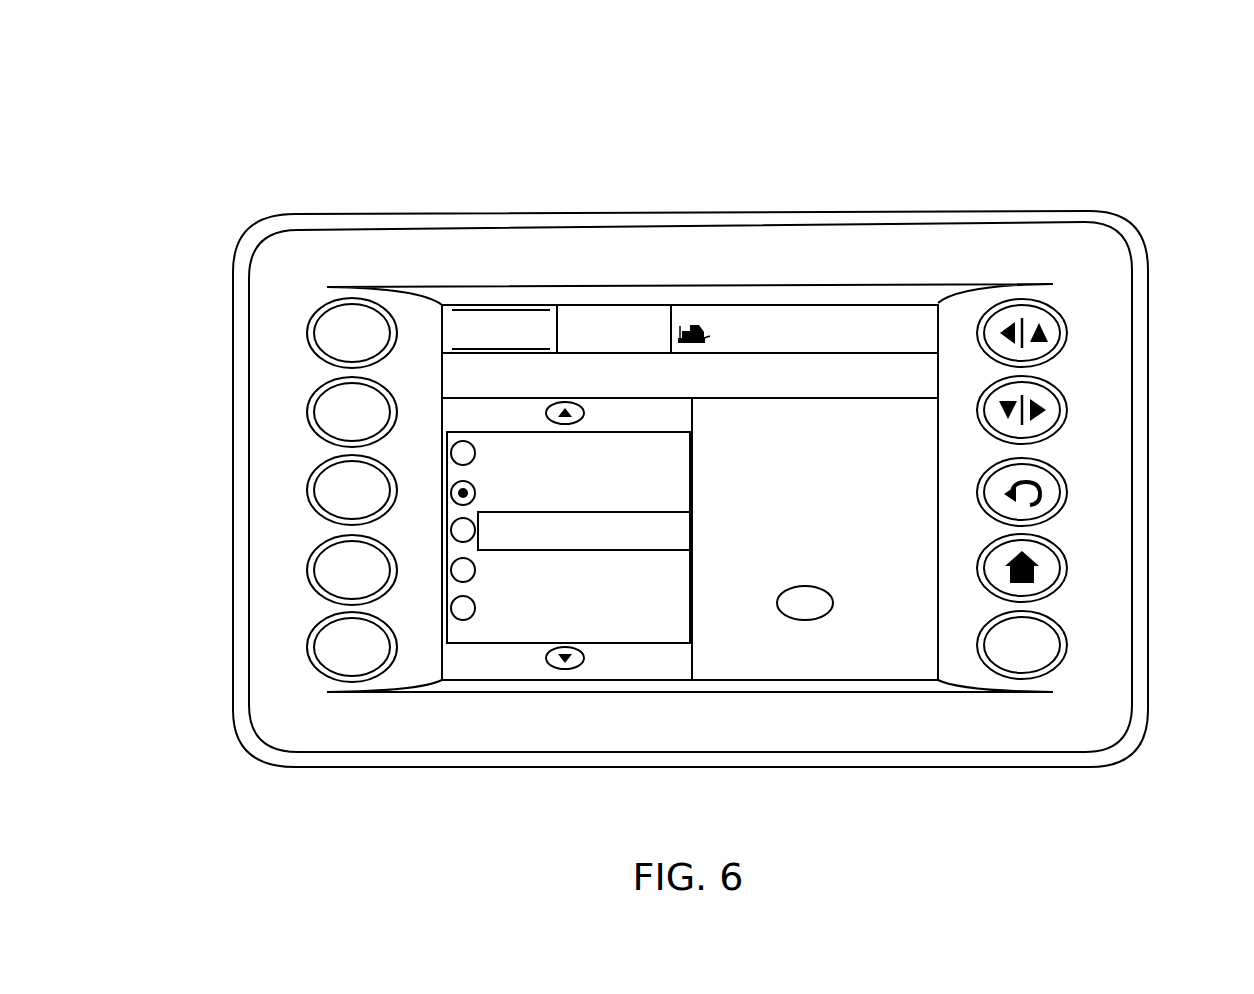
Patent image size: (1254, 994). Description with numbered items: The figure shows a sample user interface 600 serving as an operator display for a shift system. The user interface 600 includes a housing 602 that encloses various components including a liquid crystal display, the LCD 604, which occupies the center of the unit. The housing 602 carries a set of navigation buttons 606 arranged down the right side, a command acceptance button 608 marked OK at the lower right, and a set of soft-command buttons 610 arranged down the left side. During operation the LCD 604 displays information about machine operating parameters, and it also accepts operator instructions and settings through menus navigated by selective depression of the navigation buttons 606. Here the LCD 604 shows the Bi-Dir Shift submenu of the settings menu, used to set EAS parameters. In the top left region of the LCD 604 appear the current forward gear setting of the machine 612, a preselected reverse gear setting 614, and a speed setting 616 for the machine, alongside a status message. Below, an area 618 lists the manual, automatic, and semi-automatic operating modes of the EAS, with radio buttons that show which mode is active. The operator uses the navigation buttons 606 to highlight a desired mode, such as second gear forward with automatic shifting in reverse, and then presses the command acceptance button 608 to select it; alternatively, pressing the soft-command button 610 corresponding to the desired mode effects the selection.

The user interface 600 is at (1184, 106).
The housing 602 is at (1107, 272).
The liquid crystal display (LCD) 604 is at (877, 655).
The navigation buttons 606 is at (1065, 333).
The command acceptance button 608 is at (1065, 645).
The soft-command buttons 610 is at (310, 485).
The current forward gear setting 612 is at (470, 312).
The preselected reverse gear setting 614 is at (580, 312).
The speed setting 616 is at (649, 311).
The operating mode display area 618 is at (613, 628).